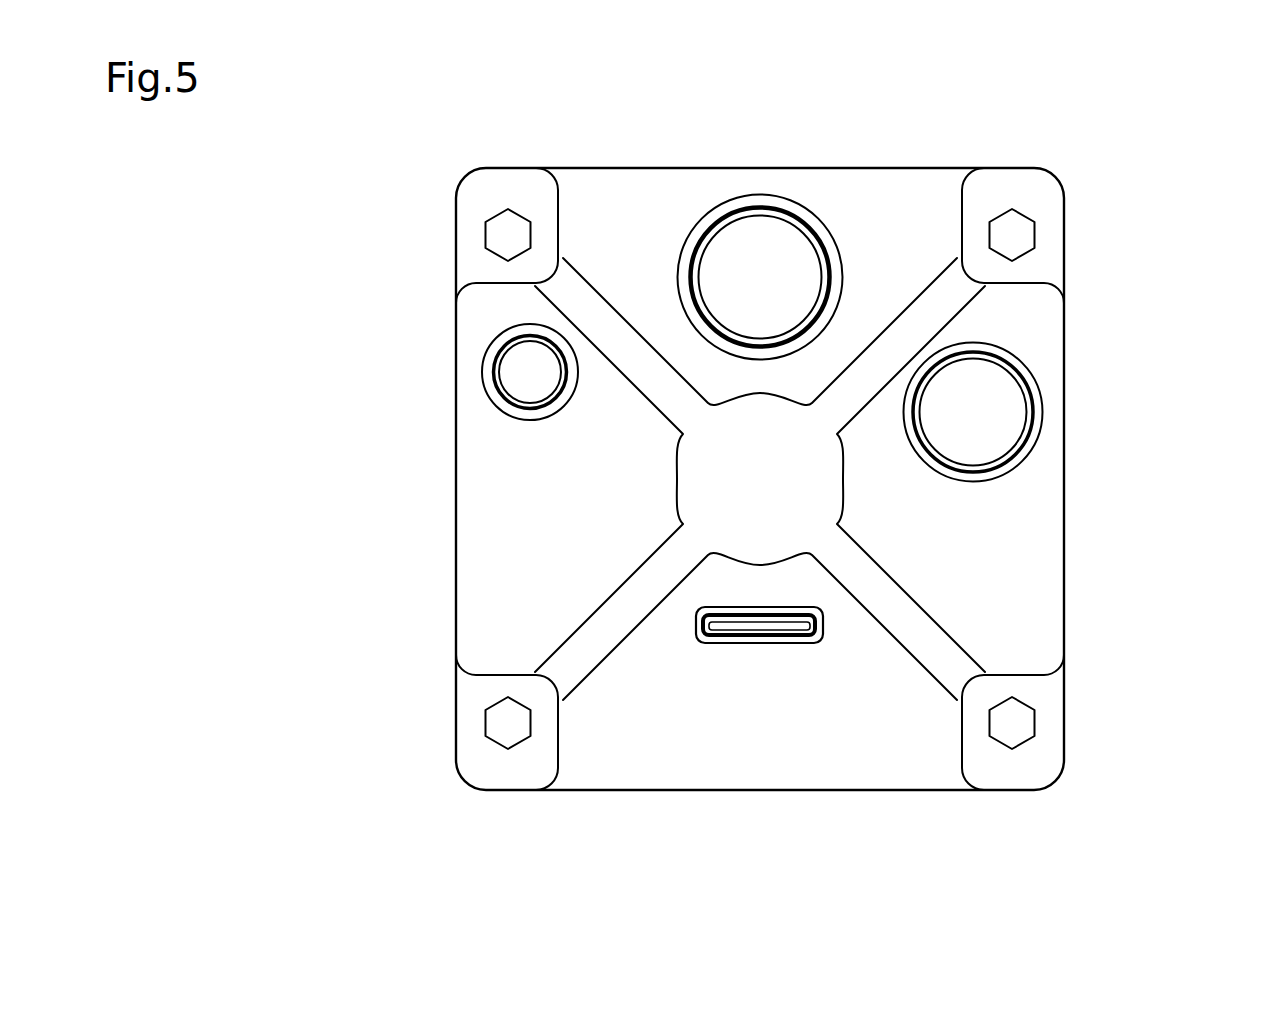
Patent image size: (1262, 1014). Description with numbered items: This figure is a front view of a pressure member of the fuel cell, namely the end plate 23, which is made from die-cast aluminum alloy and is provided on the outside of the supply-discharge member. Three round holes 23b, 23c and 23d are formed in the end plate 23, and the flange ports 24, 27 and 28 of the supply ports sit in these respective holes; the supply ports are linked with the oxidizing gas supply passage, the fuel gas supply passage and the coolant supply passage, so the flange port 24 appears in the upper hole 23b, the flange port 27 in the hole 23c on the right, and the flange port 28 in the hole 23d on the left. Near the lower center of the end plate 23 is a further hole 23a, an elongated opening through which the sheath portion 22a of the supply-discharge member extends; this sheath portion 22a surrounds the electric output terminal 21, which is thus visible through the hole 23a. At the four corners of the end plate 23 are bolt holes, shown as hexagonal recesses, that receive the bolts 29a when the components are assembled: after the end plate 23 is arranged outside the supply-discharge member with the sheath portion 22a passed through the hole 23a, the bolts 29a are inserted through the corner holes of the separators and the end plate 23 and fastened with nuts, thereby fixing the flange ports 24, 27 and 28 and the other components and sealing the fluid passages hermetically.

The electric output terminal 21 is at (750, 620).
The sheath portion 22a is at (780, 628).
The end plate 23 is at (906, 158).
The hole 23a is at (817, 638).
The hole 23b is at (755, 196).
The hole 23c is at (1030, 447).
The hole 23d is at (493, 393).
The flange port 24 is at (782, 217).
The flange port 27 is at (1027, 400).
The flange port 28 is at (493, 360).
The bolts 29a is at (505, 236).